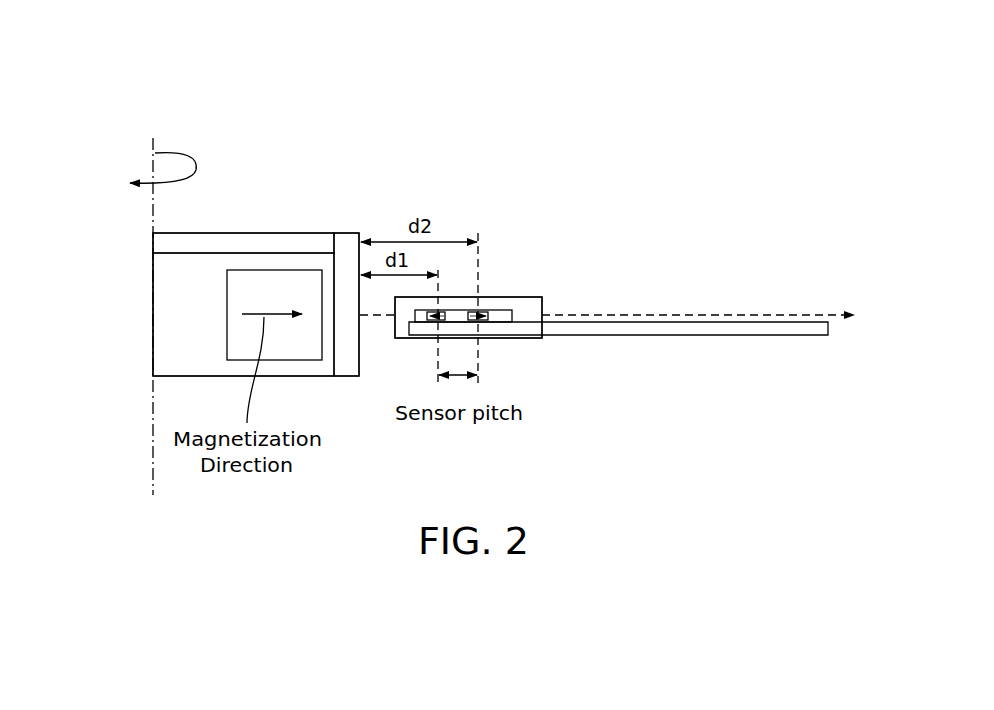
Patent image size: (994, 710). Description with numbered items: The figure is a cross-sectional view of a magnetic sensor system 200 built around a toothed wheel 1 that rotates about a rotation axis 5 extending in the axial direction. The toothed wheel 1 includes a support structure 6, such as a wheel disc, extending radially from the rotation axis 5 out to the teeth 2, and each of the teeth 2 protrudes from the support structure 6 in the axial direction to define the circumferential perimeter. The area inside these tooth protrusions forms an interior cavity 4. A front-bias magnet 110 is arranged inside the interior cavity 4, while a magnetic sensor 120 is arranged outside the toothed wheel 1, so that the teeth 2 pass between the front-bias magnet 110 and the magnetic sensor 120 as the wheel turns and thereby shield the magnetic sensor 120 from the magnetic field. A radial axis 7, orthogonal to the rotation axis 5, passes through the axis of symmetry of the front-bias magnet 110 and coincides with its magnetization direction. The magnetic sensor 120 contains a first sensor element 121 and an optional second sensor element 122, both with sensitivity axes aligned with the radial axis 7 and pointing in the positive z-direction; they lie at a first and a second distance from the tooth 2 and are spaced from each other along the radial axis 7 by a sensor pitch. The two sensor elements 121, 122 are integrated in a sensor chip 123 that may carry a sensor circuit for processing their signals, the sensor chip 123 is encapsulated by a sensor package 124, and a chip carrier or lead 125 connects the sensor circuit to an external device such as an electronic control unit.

The magnetic sensor system 200 is at (132, 70).
The toothed wheel 1 is at (257, 190).
The teeth 2 is at (350, 377).
The interior cavity 4 is at (177, 296).
The rotation axis 5 is at (152, 168).
The support structure 6 is at (268, 232).
The radial axis 7 is at (732, 315).
The front-bias magnet 110 is at (282, 332).
The magnetic sensor 120 is at (545, 291).
The first sensor element 121 is at (427, 318).
The second sensor element 122 is at (488, 318).
The sensor chip 123 is at (502, 315).
The sensor package 124 is at (498, 297).
The chip carrier or lead 125 is at (687, 336).